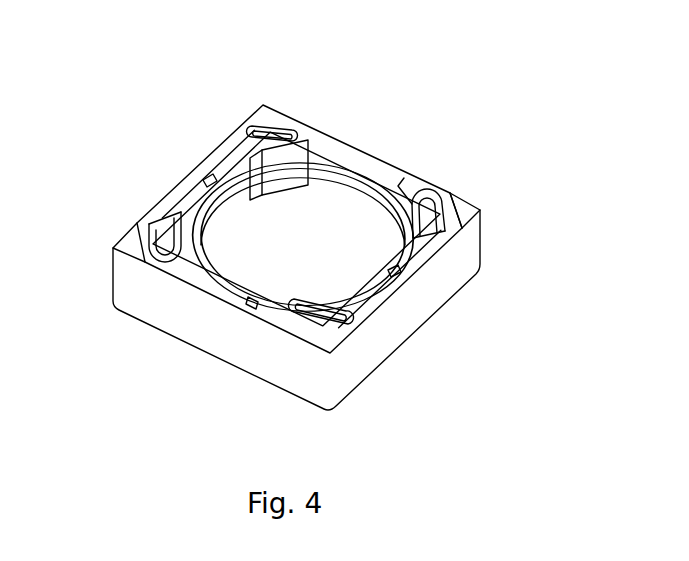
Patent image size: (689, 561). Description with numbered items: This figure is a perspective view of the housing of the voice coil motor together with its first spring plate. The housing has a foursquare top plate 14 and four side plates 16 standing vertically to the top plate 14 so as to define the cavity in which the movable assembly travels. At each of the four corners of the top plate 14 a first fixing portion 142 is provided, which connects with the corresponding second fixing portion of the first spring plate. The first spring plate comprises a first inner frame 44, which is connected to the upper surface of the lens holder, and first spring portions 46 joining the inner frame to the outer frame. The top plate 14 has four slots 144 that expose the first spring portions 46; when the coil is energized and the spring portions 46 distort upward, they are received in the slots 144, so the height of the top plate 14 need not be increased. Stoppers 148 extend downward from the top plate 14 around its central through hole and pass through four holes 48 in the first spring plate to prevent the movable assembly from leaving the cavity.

The top plate 14 is at (325, 202).
The side plate 16 is at (402, 320).
The first inner frame 44 is at (205, 178).
The first spring portion 46 is at (430, 200).
The hole 48 is at (160, 213).
The first fixing portion 142 is at (463, 214).
The slot 144 is at (408, 192).
The stopper 148 is at (250, 162).